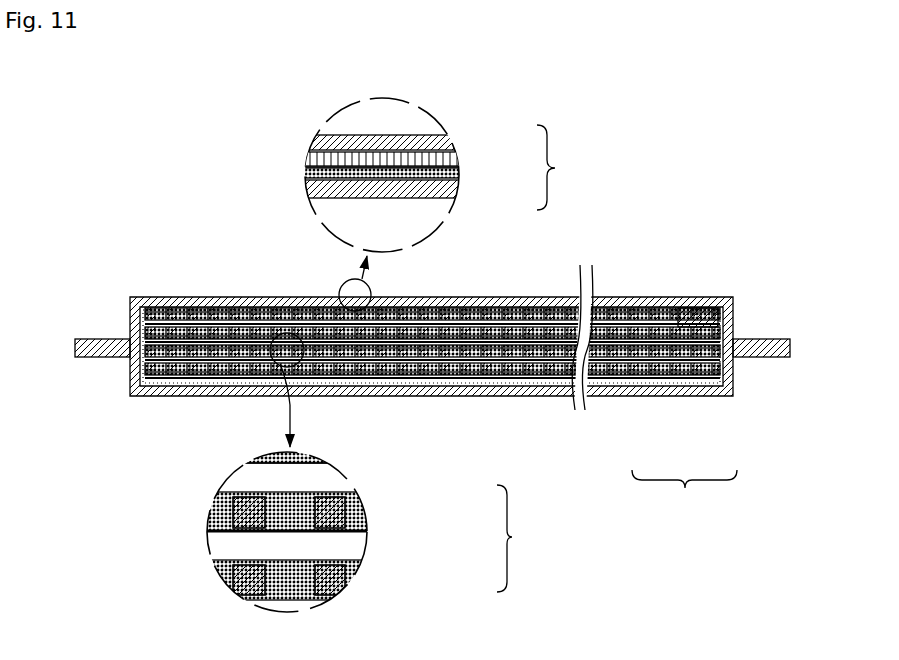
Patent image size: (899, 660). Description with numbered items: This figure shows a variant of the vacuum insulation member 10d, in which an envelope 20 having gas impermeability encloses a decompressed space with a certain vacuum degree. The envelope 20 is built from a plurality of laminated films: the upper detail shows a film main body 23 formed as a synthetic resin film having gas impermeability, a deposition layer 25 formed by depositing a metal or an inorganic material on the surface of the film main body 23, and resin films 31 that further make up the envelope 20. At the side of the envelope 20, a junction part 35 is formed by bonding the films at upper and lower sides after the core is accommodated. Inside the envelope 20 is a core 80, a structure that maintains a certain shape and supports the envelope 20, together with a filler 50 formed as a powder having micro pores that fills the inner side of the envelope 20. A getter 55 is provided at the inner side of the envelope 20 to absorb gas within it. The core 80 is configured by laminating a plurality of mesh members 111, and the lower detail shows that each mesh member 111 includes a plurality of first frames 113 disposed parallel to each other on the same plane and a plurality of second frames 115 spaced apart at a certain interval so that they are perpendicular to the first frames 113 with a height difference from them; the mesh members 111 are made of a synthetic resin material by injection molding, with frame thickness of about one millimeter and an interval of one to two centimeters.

The battery 10d is at (166, 210).
The envelope 20 is at (244, 295).
The film main body 23 is at (437, 162).
The deposition layer 25 is at (443, 170).
The resin film 31 is at (398, 140).
The junction part 35 is at (100, 338).
The filler 50 is at (213, 515).
The getter 55 is at (698, 312).
The core 80 is at (703, 517).
The mesh member 111 is at (657, 378).
The first frame 113 is at (343, 540).
The second frame 115 is at (348, 585).